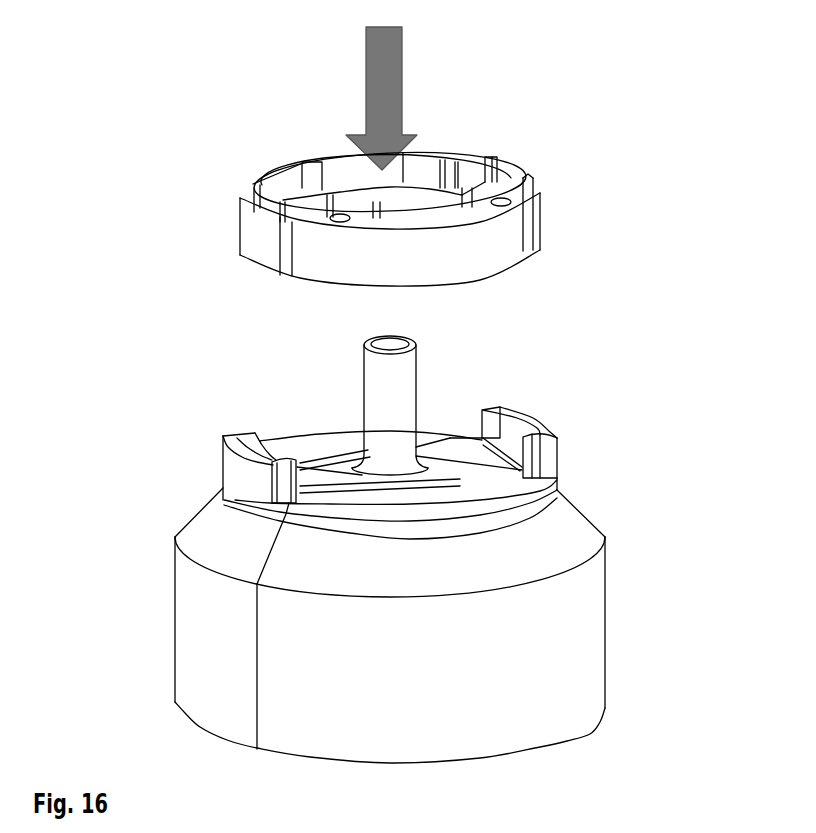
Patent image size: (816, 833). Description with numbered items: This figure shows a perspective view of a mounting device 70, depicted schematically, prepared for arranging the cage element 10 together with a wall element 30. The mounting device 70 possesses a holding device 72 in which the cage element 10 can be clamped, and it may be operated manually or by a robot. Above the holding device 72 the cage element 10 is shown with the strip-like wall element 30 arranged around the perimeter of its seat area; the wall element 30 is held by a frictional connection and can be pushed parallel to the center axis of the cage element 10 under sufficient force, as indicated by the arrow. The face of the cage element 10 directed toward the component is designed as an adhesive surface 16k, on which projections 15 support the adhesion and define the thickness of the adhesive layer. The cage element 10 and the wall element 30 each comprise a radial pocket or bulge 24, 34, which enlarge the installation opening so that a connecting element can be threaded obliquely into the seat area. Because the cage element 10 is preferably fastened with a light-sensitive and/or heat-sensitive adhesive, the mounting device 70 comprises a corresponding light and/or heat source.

The cage element 10 is at (493, 242).
The projections 15 is at (512, 202).
The adhesive surface 16k is at (428, 220).
The radial pocket or bulge 24 is at (250, 240).
The wall element 30 is at (458, 158).
The radial pocket or bulge 34 is at (258, 197).
The mounting device 70 is at (742, 371).
The holding device 72 is at (224, 452).